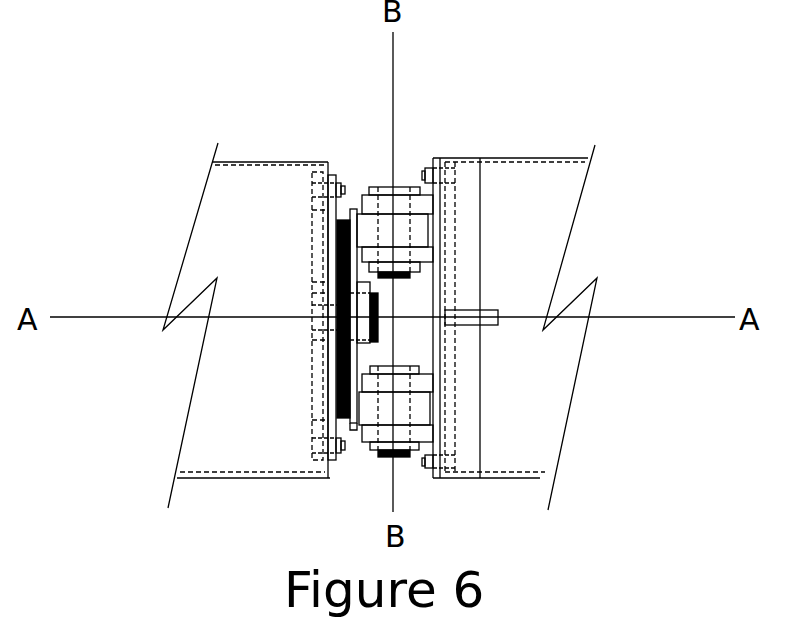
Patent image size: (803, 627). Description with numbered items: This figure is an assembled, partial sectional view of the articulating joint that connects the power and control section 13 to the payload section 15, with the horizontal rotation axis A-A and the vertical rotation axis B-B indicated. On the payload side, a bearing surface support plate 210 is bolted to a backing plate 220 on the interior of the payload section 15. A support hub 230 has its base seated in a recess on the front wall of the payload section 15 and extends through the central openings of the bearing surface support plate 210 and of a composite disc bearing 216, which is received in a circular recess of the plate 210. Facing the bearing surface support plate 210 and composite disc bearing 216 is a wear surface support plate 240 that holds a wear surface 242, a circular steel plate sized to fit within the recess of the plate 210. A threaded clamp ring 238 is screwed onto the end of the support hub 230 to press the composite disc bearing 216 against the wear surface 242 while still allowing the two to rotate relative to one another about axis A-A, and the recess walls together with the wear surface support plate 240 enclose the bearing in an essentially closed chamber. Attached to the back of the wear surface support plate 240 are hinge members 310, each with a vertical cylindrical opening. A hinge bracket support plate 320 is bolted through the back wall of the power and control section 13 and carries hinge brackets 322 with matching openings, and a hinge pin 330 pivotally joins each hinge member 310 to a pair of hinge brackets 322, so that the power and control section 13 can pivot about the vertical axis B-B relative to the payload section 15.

The power and control section 13 is at (549, 461).
The payload section 15 is at (237, 448).
The bearing surface support plate 210 is at (333, 177).
The composite disc bearing 216 is at (337, 385).
The backing plate 220 is at (312, 203).
The support hub 230 is at (312, 317).
The clamp ring 238 is at (375, 313).
The wear surface support plate 240 is at (354, 425).
The wear surface 242 is at (350, 363).
The hinge member 310 is at (425, 402).
The hinge bracket support plate 320 is at (435, 225).
The hinge bracket 322 is at (425, 432).
The hinge pin 330 is at (393, 190).